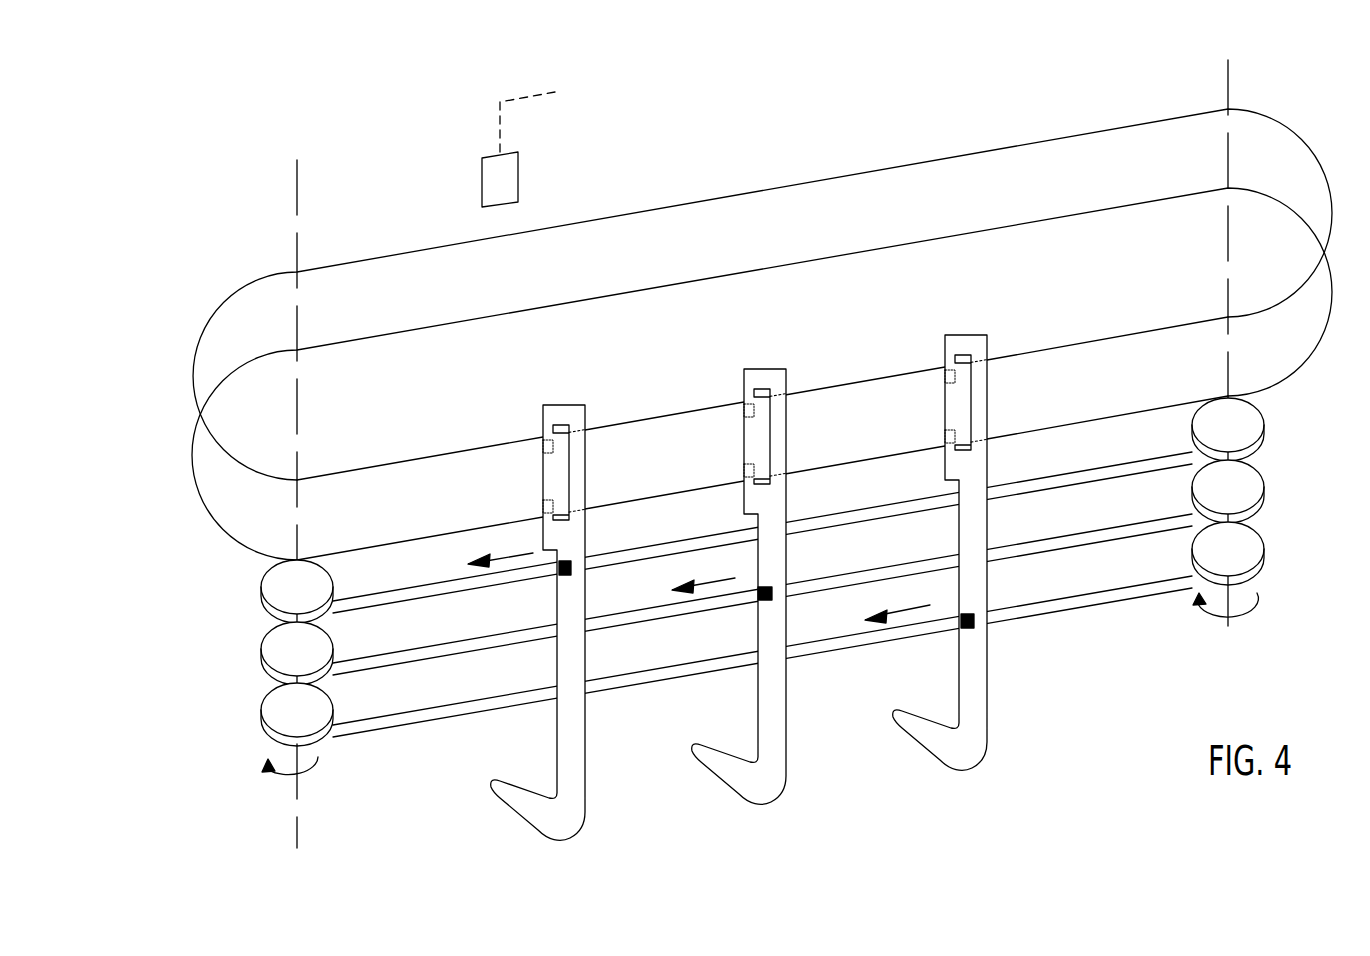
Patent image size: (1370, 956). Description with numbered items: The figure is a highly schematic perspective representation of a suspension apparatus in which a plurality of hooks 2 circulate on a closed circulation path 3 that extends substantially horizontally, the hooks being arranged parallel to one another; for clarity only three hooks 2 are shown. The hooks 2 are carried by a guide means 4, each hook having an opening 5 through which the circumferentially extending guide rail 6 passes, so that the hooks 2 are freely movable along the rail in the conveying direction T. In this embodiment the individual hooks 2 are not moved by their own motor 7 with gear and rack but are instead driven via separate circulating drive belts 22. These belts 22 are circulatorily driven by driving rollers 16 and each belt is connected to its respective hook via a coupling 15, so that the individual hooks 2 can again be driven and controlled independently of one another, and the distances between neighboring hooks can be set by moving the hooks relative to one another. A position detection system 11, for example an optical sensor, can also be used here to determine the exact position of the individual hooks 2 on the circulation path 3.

The hooks 2 is at (584, 830).
The closed circulation path 3 is at (1320, 139).
The guide means 4 is at (527, 440).
The opening 5 is at (972, 449).
The guide rail 6 is at (1139, 357).
The motor 7 is at (348, 592).
The position detection system 11 is at (482, 186).
The coupling 15 is at (556, 578).
The driving rollers 16 is at (283, 592).
The drive belts 22 is at (417, 725).